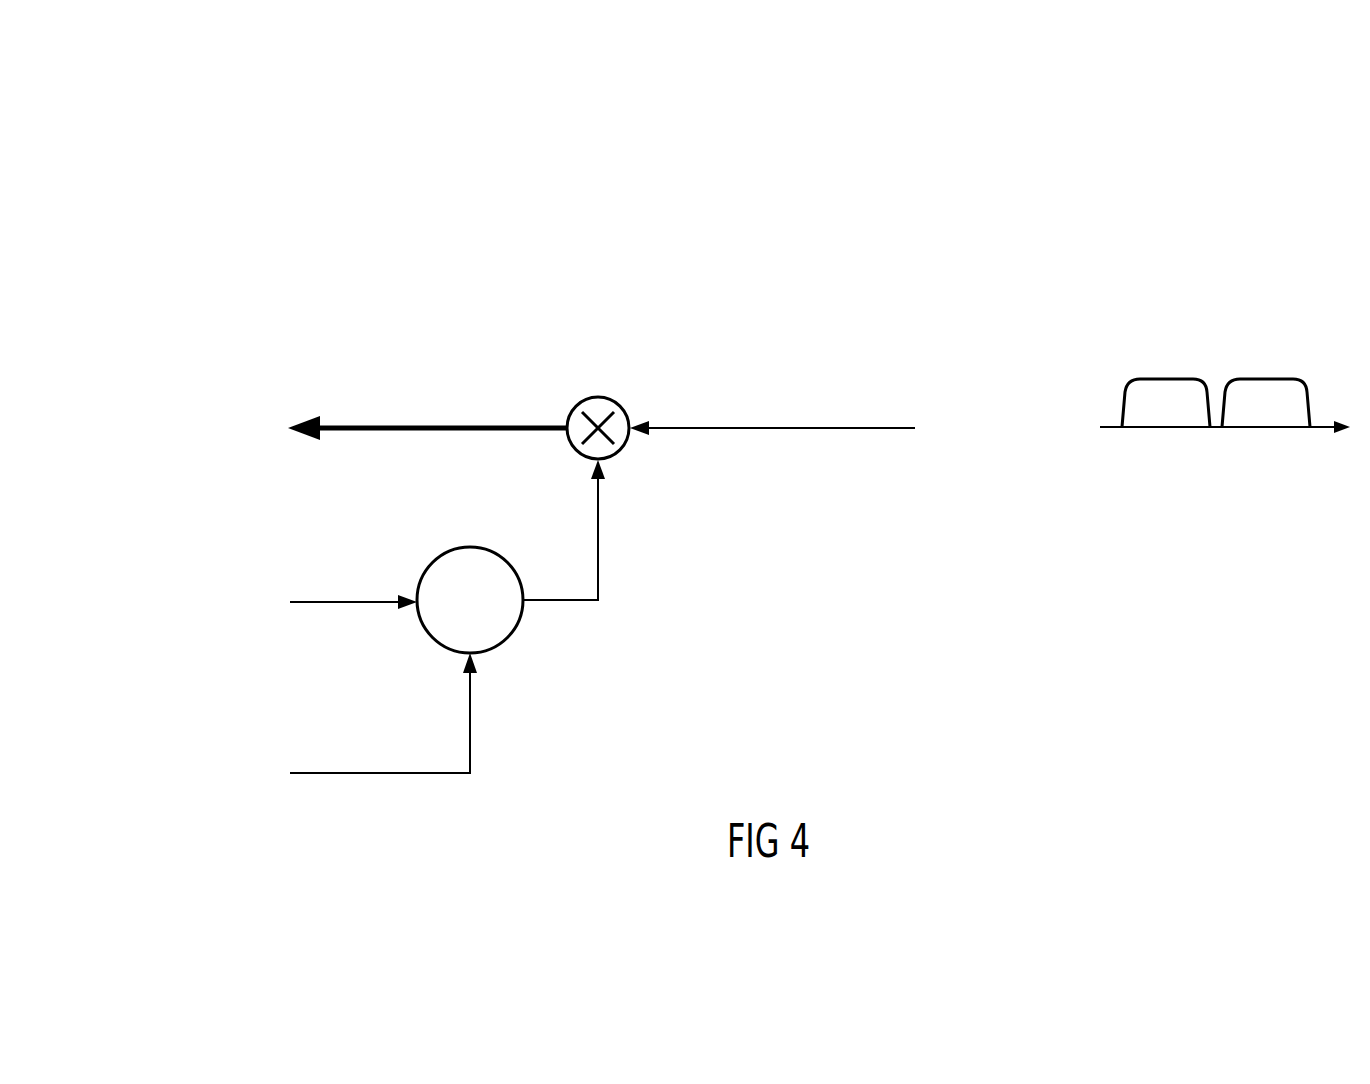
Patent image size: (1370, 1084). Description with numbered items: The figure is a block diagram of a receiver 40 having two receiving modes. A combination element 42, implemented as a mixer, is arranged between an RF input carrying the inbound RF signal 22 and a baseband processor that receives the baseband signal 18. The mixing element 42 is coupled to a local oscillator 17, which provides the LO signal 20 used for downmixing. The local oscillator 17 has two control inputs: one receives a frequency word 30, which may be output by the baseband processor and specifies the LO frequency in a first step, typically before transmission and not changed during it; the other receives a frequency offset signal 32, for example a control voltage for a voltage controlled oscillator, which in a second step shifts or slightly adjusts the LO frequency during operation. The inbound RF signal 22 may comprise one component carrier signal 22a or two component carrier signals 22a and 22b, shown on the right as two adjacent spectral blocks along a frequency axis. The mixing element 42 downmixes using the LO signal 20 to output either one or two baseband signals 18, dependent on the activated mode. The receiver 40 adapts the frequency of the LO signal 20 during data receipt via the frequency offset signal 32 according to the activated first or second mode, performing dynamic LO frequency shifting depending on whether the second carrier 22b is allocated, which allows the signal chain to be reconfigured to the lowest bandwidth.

The receiver 40 is at (1010, 278).
The combination element 42 is at (598, 396).
The baseband signal 18 is at (240, 410).
The inbound RF signal 22 is at (978, 410).
The LO signal 20 is at (713, 524).
The local oscillator 17 is at (510, 640).
The frequency word 30 is at (243, 588).
The frequency offset signal 32 is at (243, 750).
The component carrier signal 22a is at (1163, 378).
The component carrier signal 22b is at (1263, 378).